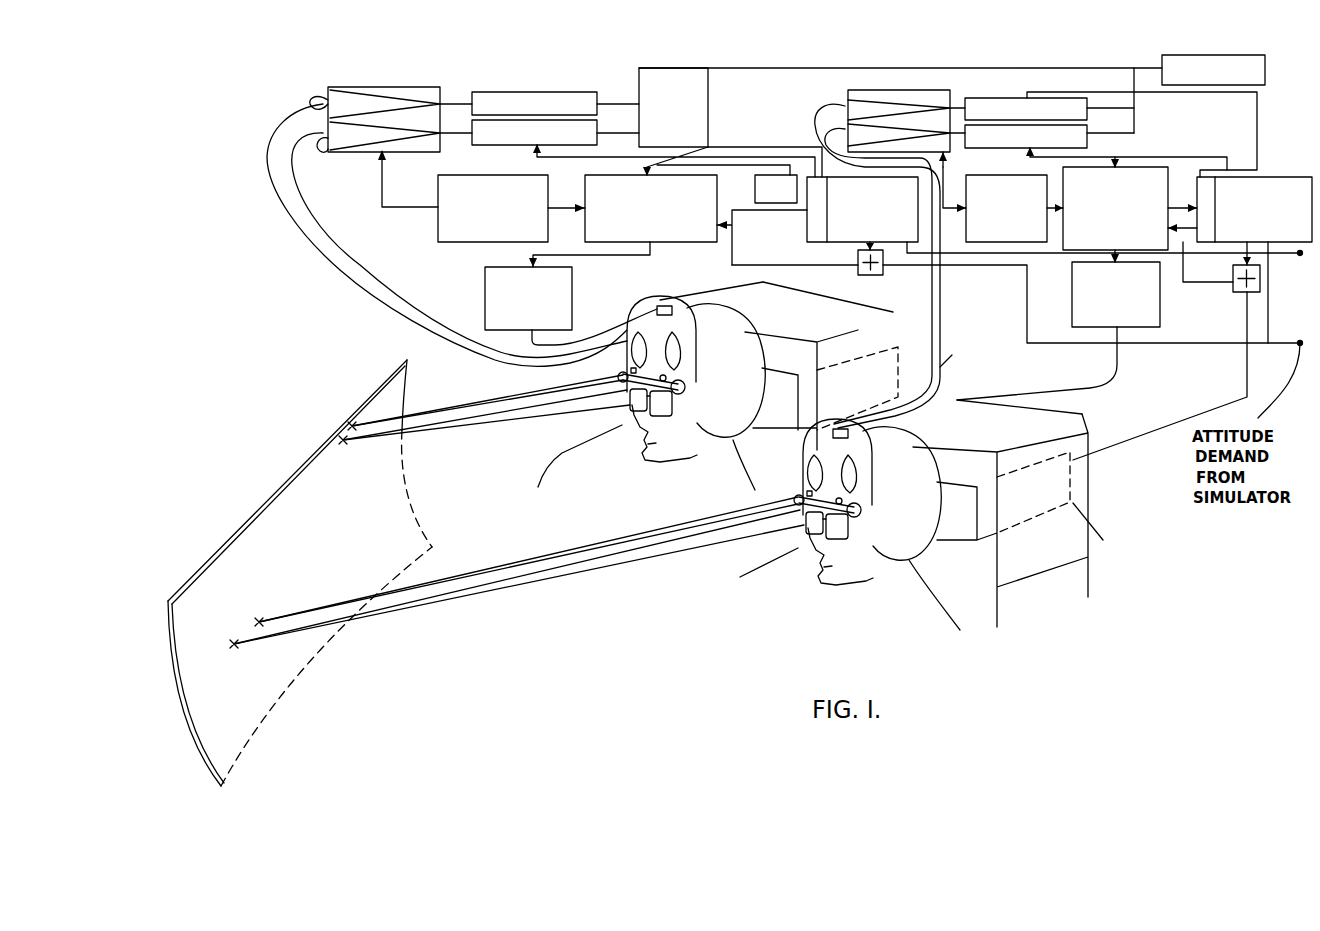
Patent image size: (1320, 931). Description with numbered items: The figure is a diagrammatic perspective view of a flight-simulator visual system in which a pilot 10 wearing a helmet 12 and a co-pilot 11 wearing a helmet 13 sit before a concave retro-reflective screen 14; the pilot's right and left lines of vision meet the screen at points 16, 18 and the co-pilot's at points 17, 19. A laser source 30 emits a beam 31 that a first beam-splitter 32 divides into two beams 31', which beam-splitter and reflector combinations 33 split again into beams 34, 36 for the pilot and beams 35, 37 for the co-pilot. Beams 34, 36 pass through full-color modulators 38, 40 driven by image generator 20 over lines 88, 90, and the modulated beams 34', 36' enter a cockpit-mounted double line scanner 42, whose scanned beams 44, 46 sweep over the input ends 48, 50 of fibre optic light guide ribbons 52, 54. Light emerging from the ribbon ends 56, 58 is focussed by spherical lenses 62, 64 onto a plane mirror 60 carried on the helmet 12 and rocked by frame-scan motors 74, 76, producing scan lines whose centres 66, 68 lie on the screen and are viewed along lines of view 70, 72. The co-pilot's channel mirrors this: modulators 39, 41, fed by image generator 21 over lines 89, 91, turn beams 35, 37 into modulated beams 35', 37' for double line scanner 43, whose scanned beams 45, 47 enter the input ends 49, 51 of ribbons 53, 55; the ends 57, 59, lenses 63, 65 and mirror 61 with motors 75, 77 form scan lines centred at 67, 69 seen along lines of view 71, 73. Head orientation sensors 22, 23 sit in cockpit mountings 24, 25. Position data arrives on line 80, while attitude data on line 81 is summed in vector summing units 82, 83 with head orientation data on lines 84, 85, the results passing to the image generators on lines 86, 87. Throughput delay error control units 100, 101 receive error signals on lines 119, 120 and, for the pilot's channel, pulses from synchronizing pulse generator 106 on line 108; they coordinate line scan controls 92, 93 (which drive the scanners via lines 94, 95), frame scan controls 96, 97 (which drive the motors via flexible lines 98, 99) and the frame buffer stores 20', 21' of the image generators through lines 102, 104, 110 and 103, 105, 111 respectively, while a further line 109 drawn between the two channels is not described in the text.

The pilot 10 is at (562, 453).
The co-pilot 11 is at (738, 578).
The helmet 12 is at (716, 318).
The helmet 13 is at (884, 502).
The concave retro-reflective screen 14 is at (280, 478).
The screen point 16 is at (351, 420).
The screen point 17 is at (259, 620).
The screen point 18 is at (340, 438).
The screen point 19 is at (234, 642).
The image generator 20 is at (1055, 216).
The frame buffer memory 20' is at (789, 237).
The image generator 21 is at (1254, 199).
The frame buffer store 21' is at (1241, 159).
The head orientation sensor 22 is at (872, 362).
The head orientation sensor 23 is at (1088, 433).
The mounting 24 is at (867, 322).
The mounting 25 is at (1082, 412).
The laser source 30 is at (1265, 75).
The output laser beam 31 is at (1193, 103).
The split laser beams 31' is at (617, 71).
The first beam-splitter 32 is at (1132, 70).
The beam-splitter and reflector combinations 33 is at (630, 140).
The laser beam 34 is at (591, 74).
The modulated beam 34' is at (410, 94).
The laser beam 35 is at (1106, 122).
The modulated beam 35' is at (973, 85).
The laser beam 36 is at (623, 114).
The modulated beam 36' is at (402, 144).
The laser beam 37 is at (1150, 141).
The modulated beam 37' is at (961, 164).
The full-color modulator 38 is at (490, 93).
The full-colour modulator 39 is at (982, 99).
The full-color modulator 40 is at (513, 146).
The full-color modulator 41 is at (990, 148).
The double line scanner 42 is at (322, 100).
The double line scanner 43 is at (922, 102).
The scanned beam 44 is at (420, 87).
The scanned beam 45 is at (866, 100).
The scanned beam 46 is at (362, 145).
The scanned beam 47 is at (905, 140).
The input end 48 is at (312, 100).
The input end 49 is at (828, 104).
The input end 50 is at (328, 147).
The input end 51 is at (828, 135).
The fibre optic light guide ribbon 52 is at (270, 160).
The fibre optic light guide ribbon 53 is at (940, 272).
The fibre optic light guide ribbon 54 is at (333, 200).
The fibre optic light guide ribbon 55 is at (940, 308).
The light guide end 56 is at (634, 325).
The light guide end 57 is at (812, 455).
The light guide end 58 is at (696, 325).
The light guide end 59 is at (858, 474).
The plane mirror 60 is at (649, 350).
The plane mirror 61 is at (825, 473).
The spherical lens 62 is at (618, 377).
The spherical lens 63 is at (808, 496).
The spherical lens 64 is at (668, 380).
The spherical lens 65 is at (858, 492).
The scan line centre 66 is at (514, 404).
The scan line centre 67 is at (677, 532).
The scan line centre 68 is at (480, 414).
The scan line centre 69 is at (494, 580).
The line of view 70 is at (437, 417).
The line of view 71 is at (466, 581).
The line of view 72 is at (494, 425).
The line of view 73 is at (626, 573).
The frame scan motor 74 is at (620, 376).
The frame scan motor 75 is at (790, 500).
The frame scan motor 76 is at (686, 388).
The frame scan motor 77 is at (855, 521).
The position data line 80 is at (1272, 255).
The attitude data line 81 is at (1300, 343).
The vector summing unit 82 is at (860, 270).
The vector summing unit 83 is at (1233, 272).
The head orientation data line 84 is at (896, 338).
The head orientation data line 85 is at (1248, 378).
The summed output line 86 is at (864, 250).
The summed output line 87 is at (1270, 292).
The image line 88 is at (662, 88).
The image line 89 is at (1258, 120).
The image line 90 is at (655, 160).
The image line 91 is at (1227, 157).
The line scan control unit 92 is at (452, 243).
The line scan control unit 93 is at (1040, 162).
The line scan control line 94 is at (384, 188).
The line scan control line 95 is at (944, 210).
The frame scan control unit 96 is at (573, 285).
The frame scan control unit 97 is at (1160, 298).
The flexible line 98 is at (588, 338).
The flexible line 99 is at (1118, 358).
The throughput delay error control unit 100 is at (693, 244).
The throughput delay error control unit 101 is at (1185, 190).
The timing control line 102 is at (570, 205).
The timing control line 103 is at (1068, 162).
The timing control line 104 is at (532, 254).
The timing control line 105 is at (1090, 258).
The synchronizing pulse generator 106 is at (755, 193).
The sync pulse line 108 is at (708, 150).
The signal line 109 is at (788, 160).
The video synchronisation line 110 is at (734, 218).
The video synchronisation line 111 is at (1175, 208).
The throughput delay error signal line 119 is at (762, 266).
The throughput delay error signal line 120 is at (1186, 286).